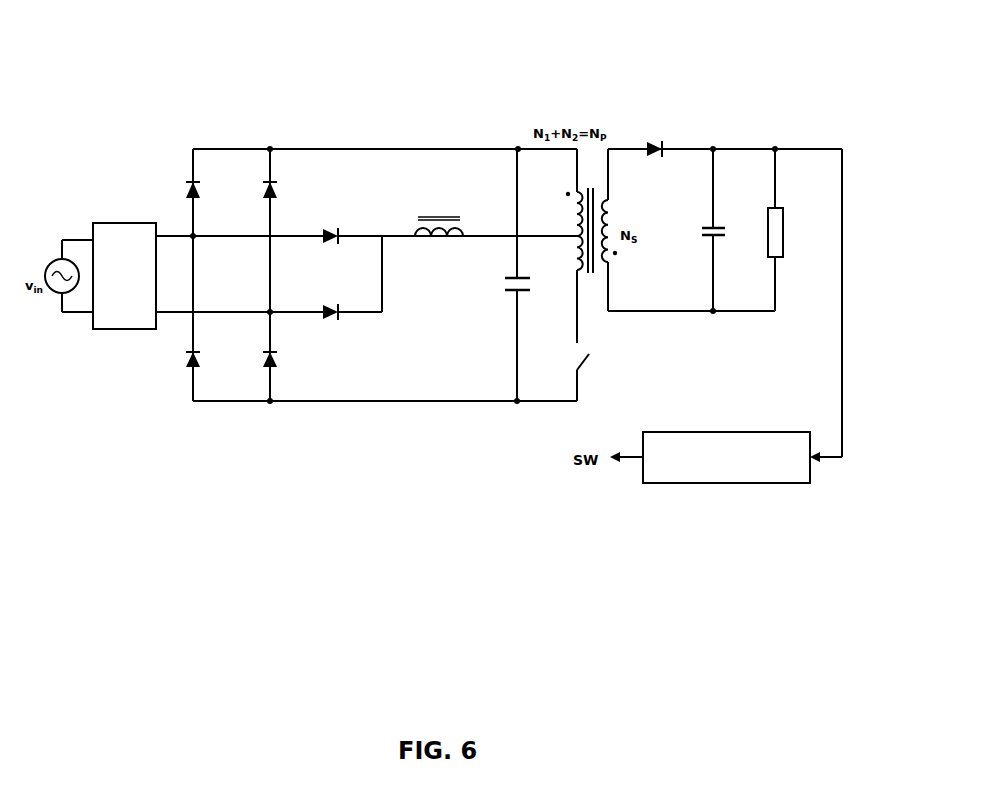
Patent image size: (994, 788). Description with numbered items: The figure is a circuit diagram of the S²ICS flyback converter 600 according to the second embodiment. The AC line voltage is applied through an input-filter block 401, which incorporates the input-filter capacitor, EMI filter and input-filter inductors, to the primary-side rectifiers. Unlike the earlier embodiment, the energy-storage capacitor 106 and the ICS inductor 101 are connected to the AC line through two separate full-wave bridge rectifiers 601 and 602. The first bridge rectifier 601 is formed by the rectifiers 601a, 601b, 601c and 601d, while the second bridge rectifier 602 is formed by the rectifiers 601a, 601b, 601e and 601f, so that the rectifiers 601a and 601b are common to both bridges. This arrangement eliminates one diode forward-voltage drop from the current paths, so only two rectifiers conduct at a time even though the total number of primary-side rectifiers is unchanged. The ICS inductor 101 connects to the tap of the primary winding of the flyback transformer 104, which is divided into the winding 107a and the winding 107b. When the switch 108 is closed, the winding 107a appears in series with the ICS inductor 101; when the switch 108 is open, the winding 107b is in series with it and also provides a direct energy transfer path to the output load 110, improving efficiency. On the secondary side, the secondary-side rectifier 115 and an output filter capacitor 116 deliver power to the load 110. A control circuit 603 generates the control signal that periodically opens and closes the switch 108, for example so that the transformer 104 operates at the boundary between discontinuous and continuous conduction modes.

The S²ICS flyback converter 600 is at (481, 62).
The full-wave bridge rectifier 601 is at (234, 128).
The input-filter block 401 is at (127, 222).
The rectifier 601a is at (190, 362).
The rectifier 601b is at (267, 362).
The rectifier 601c is at (202, 187).
The rectifier 601d is at (279, 187).
The rectifier 601e is at (338, 230).
The rectifier 601f is at (338, 318).
The ICS inductor 101 is at (442, 238).
The full-wave bridge rectifier 602 is at (400, 284).
The energy-storage capacitor 106 is at (510, 297).
The winding 107a is at (577, 266).
The winding 107b is at (577, 203).
The flyback transformer 104 is at (591, 281).
The switch 108 is at (586, 362).
The secondary-side rectifier 115 is at (664, 146).
The output filter capacitor CF 116 is at (708, 239).
The output load 110 is at (785, 218).
The control circuit 603 is at (727, 431).